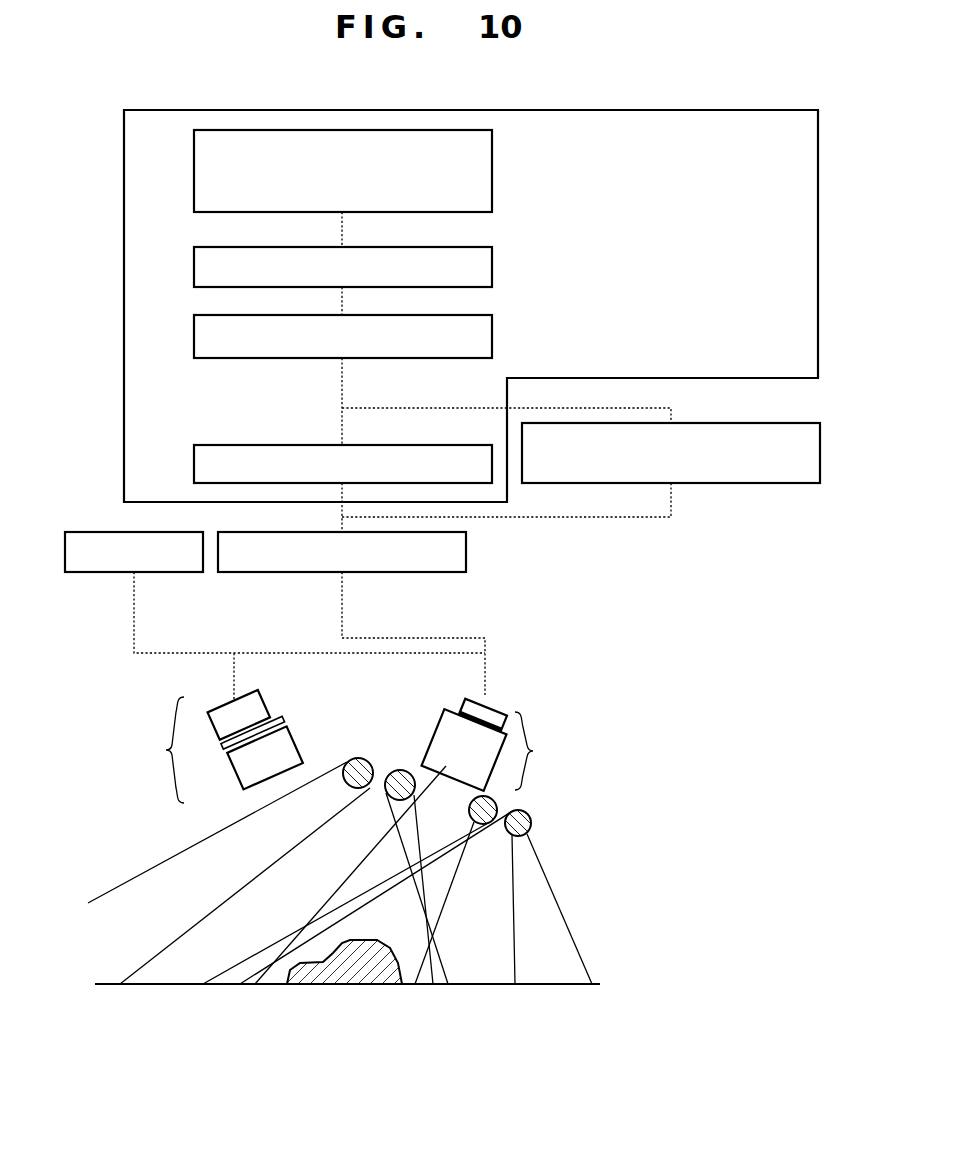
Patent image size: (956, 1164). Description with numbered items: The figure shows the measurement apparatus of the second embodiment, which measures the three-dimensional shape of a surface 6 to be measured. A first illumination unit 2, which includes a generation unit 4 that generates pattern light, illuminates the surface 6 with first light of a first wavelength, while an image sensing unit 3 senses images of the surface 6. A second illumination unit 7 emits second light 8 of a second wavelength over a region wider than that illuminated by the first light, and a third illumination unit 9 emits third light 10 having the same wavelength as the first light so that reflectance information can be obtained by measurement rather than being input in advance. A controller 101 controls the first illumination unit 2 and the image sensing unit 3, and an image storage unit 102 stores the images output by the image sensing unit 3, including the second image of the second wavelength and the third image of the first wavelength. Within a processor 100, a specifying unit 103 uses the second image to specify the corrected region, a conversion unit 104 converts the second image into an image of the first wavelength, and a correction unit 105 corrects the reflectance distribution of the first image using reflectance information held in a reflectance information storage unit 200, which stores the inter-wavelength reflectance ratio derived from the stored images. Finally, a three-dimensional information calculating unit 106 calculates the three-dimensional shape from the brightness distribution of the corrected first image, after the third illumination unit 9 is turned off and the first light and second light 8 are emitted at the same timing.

The processor 100 is at (760, 110).
The controller 101 is at (87, 530).
The image storage unit 102 is at (467, 551).
The specifying unit 103 is at (194, 464).
The conversion unit 104 is at (194, 336).
The correction unit 105 is at (194, 266).
The three-dimensional information calculating unit 106 is at (194, 158).
The reflectance information storage unit 200 is at (790, 485).
The first illumination unit 2 is at (218, 744).
The image sensing unit 3 is at (486, 742).
The generation unit 4 is at (222, 752).
The surface to be measured 6 is at (372, 955).
The second illumination unit 7 is at (497, 806).
The second light 8 is at (511, 936).
The third illumination unit 9 is at (533, 821).
The third light 10 is at (565, 896).